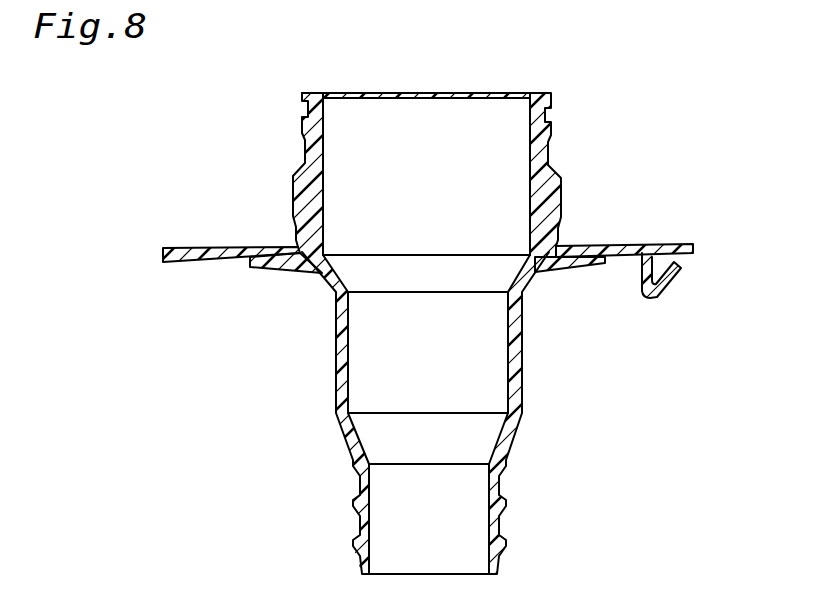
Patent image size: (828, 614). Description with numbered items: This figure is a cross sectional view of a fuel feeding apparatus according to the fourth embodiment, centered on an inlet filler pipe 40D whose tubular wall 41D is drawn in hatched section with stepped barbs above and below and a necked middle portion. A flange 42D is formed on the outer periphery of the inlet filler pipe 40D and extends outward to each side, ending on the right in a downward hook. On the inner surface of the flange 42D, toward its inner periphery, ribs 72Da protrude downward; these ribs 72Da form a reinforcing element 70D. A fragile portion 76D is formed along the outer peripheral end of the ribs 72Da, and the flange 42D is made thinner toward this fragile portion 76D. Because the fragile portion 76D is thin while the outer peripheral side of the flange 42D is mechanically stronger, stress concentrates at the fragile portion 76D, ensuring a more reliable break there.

The inlet filler pipe 40D is at (694, 141).
The tubular body 41D is at (552, 147).
The flange 42D is at (694, 247).
The fragile portion 76D is at (620, 243).
The ribs 72Da is at (580, 260).
The reinforcing element 70D is at (464, 299).